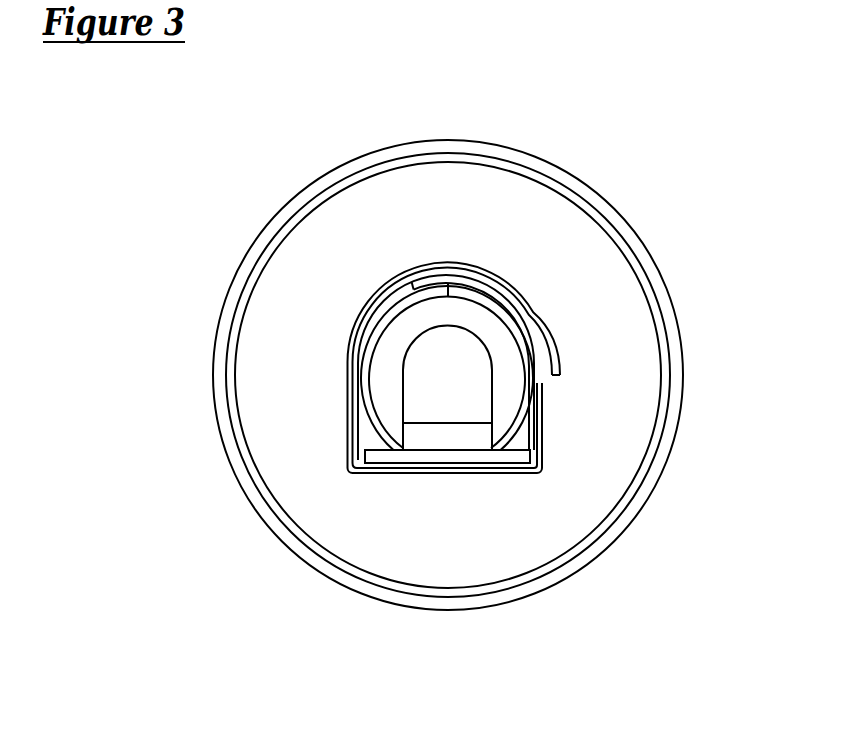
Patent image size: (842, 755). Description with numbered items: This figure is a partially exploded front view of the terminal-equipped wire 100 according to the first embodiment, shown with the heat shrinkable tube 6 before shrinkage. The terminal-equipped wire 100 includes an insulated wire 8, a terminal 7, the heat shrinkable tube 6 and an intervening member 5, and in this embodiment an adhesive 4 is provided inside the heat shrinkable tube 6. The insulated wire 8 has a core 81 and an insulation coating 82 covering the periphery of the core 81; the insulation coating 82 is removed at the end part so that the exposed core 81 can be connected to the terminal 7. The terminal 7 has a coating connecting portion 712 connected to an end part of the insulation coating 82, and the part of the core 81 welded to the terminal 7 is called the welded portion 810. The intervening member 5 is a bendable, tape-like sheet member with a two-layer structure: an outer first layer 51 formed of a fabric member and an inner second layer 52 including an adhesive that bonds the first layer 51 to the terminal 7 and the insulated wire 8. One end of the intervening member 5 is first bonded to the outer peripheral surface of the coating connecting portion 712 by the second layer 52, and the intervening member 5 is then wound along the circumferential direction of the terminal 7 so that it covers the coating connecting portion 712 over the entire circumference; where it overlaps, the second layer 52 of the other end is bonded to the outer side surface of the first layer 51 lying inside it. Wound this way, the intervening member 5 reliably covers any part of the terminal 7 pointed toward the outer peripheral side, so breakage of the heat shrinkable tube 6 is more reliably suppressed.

The terminal-equipped wire 100 is at (664, 133).
The heat shrinkable tube 6 is at (648, 237).
The adhesive 4 is at (620, 262).
The intervening member 5 is at (556, 367).
The first layer 51 is at (557, 346).
The second layer 52 is at (548, 381).
The insulated wire 8 is at (336, 367).
The insulation coating 82 is at (417, 327).
The core 81 is at (423, 365).
The terminal 7 is at (409, 503).
The coating connecting portion 712 is at (373, 413).
The welded portion 810 is at (475, 442).